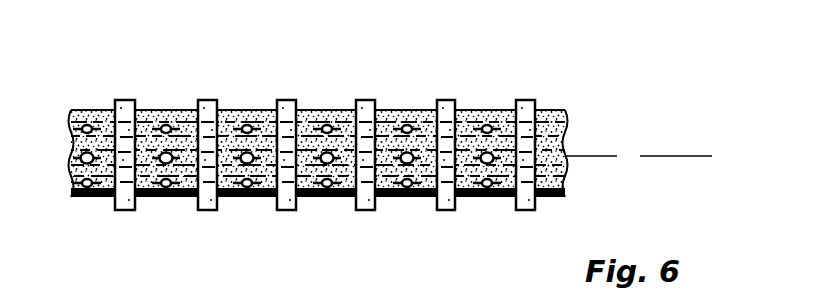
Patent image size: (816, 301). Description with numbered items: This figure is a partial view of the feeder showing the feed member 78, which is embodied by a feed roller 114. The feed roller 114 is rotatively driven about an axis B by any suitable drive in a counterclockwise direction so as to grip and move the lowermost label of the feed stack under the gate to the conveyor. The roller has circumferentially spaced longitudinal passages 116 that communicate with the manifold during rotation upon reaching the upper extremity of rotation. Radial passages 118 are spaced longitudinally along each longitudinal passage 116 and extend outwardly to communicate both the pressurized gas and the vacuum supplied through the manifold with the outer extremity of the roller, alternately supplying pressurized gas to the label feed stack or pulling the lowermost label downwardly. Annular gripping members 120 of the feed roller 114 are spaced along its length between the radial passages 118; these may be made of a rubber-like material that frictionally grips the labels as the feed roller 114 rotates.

The feed member 78 is at (568, 96).
The feed roller 114 is at (576, 110).
The longitudinal passages 116 is at (465, 125).
The radial passages 118 is at (90, 124).
The annular gripping members 120 is at (207, 99).
The axis B is at (632, 150).